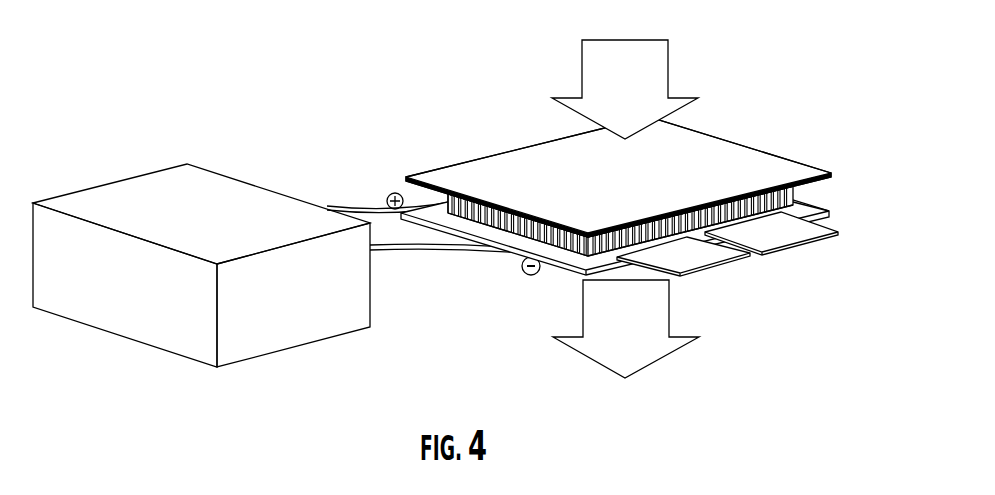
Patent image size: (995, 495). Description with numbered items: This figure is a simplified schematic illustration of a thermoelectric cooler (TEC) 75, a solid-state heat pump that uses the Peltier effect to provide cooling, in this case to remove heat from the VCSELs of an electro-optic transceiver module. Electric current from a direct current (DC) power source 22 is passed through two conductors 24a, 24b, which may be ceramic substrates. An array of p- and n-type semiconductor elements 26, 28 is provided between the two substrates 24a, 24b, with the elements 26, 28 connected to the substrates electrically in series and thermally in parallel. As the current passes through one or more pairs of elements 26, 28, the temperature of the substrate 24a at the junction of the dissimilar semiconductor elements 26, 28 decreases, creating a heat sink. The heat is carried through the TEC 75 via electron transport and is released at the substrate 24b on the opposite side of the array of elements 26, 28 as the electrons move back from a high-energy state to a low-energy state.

The direct current (DC) power source 22 is at (247, 197).
The substrate 24a is at (530, 153).
The substrate 24b is at (563, 258).
The p-type semiconductor element 26 is at (785, 240).
The n-type semiconductor element 28 is at (700, 260).
The thermoelectric cooler (TEC) 75 is at (620, 204).